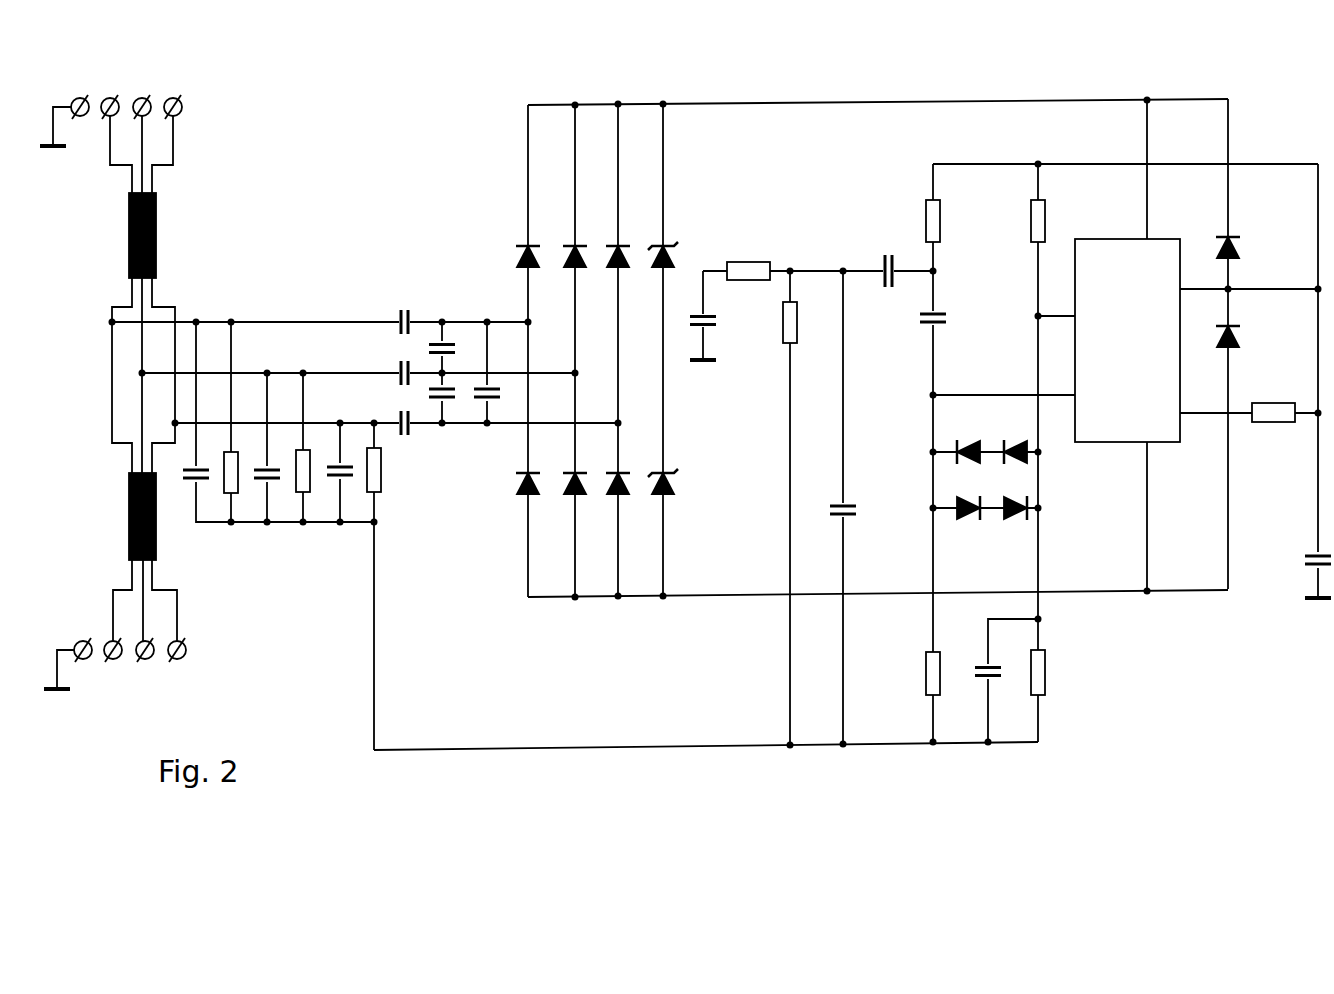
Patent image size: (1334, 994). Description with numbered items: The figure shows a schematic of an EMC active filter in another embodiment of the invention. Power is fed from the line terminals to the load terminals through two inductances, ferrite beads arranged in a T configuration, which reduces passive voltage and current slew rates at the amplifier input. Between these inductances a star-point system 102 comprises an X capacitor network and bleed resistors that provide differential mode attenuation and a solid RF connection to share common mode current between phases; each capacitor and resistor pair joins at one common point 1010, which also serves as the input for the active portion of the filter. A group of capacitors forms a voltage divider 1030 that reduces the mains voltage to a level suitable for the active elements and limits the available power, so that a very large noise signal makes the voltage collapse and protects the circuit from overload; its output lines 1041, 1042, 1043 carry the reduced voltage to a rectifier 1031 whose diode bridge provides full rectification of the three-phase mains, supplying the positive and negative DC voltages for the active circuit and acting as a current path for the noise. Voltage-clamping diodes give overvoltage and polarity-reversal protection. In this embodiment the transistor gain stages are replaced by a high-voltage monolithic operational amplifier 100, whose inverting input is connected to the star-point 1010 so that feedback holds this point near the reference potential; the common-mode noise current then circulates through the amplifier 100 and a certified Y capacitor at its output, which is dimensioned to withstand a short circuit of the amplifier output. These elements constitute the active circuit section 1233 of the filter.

The operational amplifier 100 is at (1150, 363).
The star-point system 102 is at (275, 563).
The common point 1010 is at (433, 745).
The voltage divider 1030 is at (423, 260).
The rectifier 1031 is at (623, 643).
The output line of the voltage divider 1041 is at (513, 318).
The output line of the voltage divider 1042 is at (525, 370).
The output line of the voltage divider 1043 is at (557, 422).
The active circuit section 1233 is at (1115, 728).